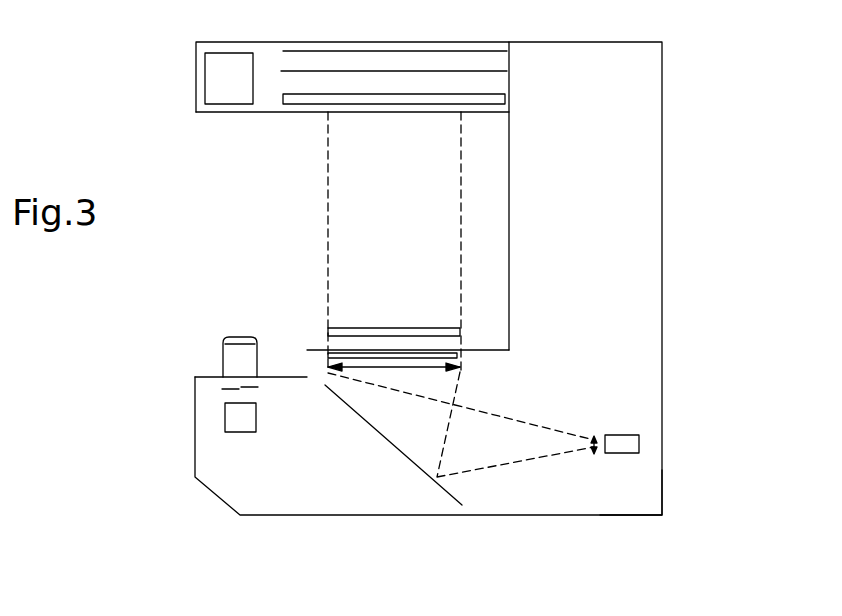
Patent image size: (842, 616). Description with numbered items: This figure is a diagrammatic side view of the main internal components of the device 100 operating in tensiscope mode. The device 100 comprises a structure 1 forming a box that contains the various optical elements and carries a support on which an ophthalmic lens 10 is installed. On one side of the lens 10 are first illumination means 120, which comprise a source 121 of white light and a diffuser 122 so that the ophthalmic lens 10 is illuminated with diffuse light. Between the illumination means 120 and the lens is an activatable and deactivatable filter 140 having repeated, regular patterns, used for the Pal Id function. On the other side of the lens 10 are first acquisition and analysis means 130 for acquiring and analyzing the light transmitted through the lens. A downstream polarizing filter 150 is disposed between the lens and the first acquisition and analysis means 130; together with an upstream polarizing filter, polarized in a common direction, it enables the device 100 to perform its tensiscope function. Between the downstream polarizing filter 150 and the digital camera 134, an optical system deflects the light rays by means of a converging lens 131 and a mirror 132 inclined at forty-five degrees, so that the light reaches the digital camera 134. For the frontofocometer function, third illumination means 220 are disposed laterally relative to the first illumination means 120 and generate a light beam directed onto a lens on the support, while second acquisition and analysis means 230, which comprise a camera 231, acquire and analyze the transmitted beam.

The structure 1 is at (662, 503).
The ophthalmic lens 10 is at (425, 328).
The device 100 is at (680, 330).
The first illumination means 120 is at (525, 57).
The source of white light 121 is at (490, 50).
The diffuser 122 is at (507, 71).
The first acquisition and analysis means 130 is at (578, 472).
The converging lens 131 is at (421, 369).
The mirror 132 is at (408, 456).
The digital camera 134 is at (640, 444).
The activatable and deactivatable filter 140 is at (505, 98).
The downstream polarizing filter 150 is at (455, 356).
The third illumination means 220 is at (212, 80).
The second acquisition and analysis means 230 is at (205, 396).
The camera 231 is at (230, 420).